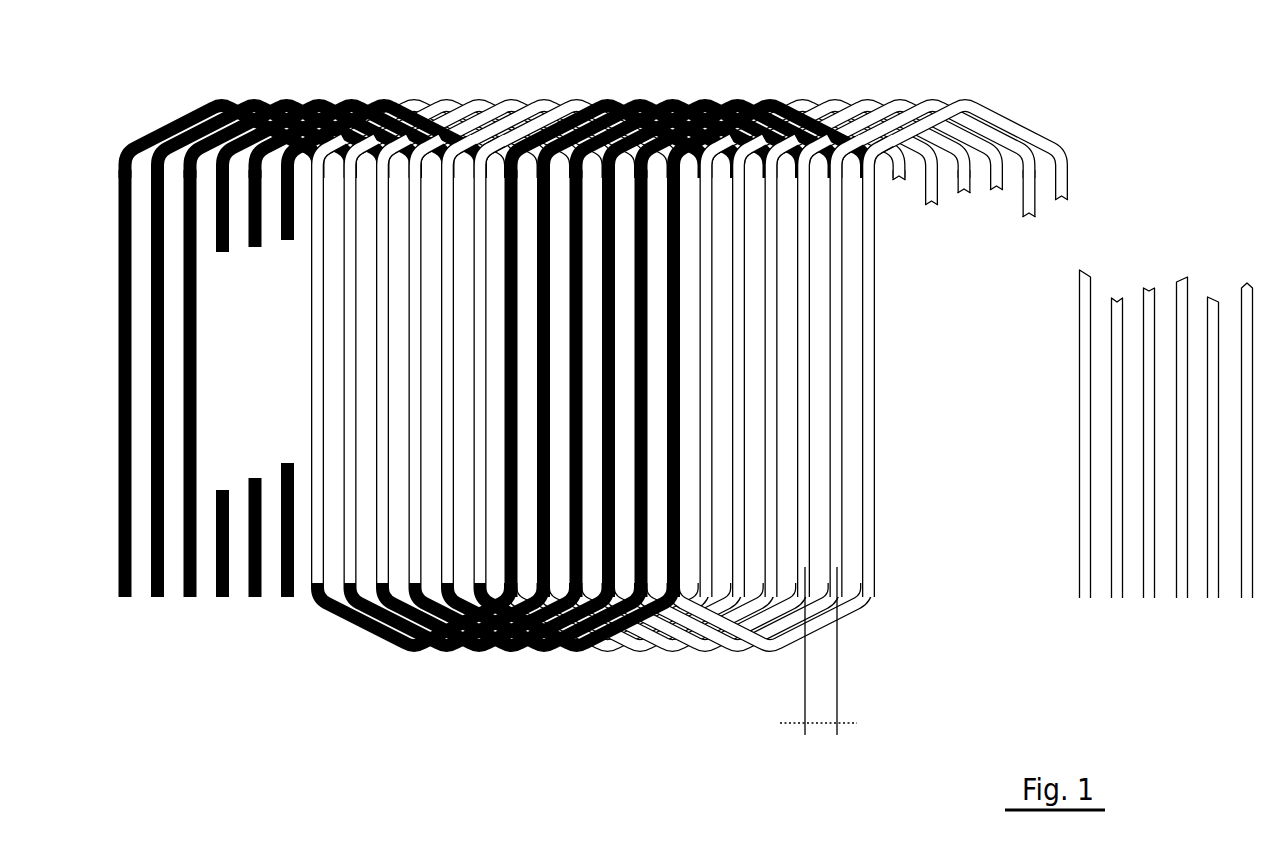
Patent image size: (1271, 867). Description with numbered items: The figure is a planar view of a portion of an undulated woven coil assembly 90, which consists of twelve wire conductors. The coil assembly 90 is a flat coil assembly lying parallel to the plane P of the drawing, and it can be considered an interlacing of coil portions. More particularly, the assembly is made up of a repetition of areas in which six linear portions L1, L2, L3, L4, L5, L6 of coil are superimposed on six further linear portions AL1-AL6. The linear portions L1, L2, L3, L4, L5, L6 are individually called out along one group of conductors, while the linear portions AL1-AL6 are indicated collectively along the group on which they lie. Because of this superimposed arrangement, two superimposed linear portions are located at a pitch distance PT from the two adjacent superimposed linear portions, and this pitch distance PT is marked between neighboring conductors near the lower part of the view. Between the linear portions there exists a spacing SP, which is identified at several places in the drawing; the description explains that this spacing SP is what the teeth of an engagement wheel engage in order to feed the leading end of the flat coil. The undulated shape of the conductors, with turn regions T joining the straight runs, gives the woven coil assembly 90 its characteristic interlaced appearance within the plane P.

The turn portion of hairpin conductor T is at (282, 97).
The spacing SP is at (752, 165).
The pitch distance PT is at (822, 725).
The linear portion L1 is at (313, 285).
The linear portion L2 is at (347, 313).
The linear portion L3 is at (382, 341).
The linear portion L4 is at (415, 367).
The linear portion L5 is at (447, 396).
The linear portion L6 is at (480, 433).
The linear portions AL1-AL6 is at (348, 656).
The plane P is at (1166, 317).
The woven coil assembly 90 is at (1152, 128).